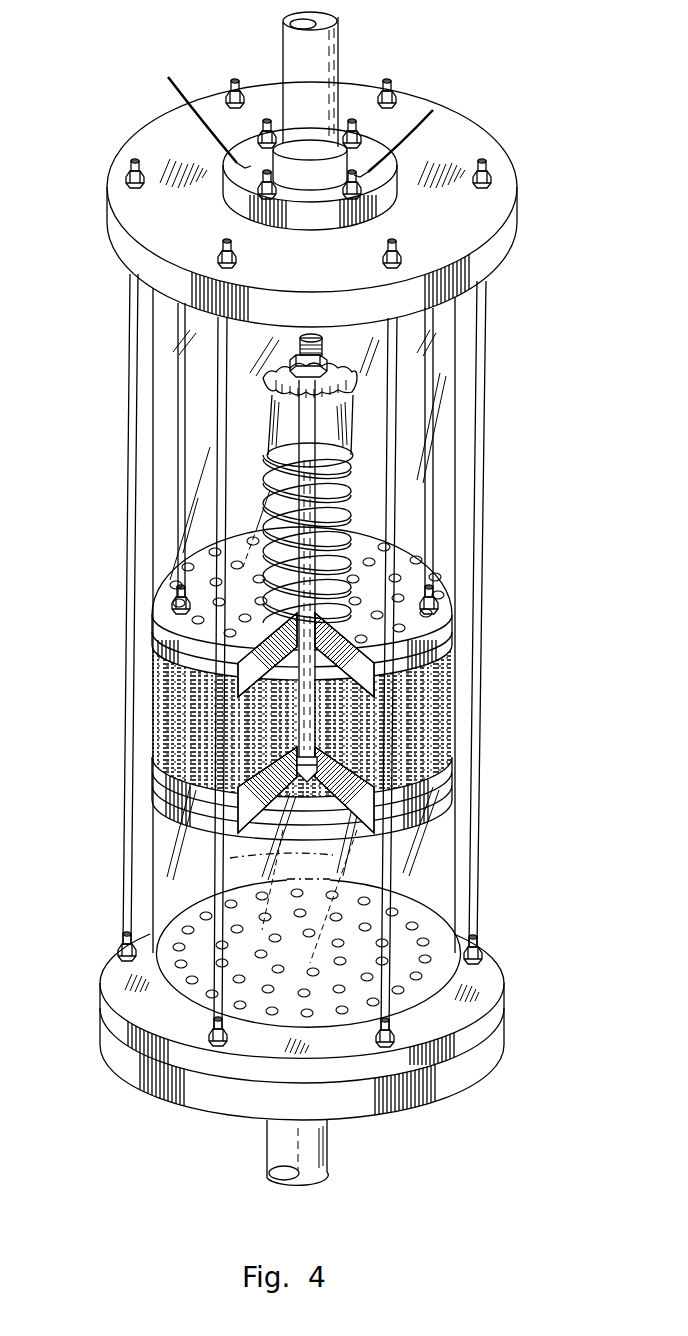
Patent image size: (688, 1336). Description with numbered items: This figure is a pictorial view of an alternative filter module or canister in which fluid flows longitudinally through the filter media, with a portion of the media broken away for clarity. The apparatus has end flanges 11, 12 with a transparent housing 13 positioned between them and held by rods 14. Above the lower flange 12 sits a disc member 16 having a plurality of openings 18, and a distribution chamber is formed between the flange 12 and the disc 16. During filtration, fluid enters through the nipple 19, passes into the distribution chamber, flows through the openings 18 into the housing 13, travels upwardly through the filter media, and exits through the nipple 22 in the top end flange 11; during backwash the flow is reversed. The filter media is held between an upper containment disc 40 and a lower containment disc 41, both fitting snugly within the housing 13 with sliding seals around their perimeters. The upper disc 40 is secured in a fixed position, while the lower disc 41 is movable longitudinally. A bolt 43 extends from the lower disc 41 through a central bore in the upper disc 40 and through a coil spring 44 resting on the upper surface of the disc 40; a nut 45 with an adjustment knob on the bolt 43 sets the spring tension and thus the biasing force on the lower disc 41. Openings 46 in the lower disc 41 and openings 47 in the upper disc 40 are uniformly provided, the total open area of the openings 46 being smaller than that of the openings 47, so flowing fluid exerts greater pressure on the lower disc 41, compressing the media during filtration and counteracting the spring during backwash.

The end flange 11 is at (467, 128).
The end flange 12 is at (167, 1075).
The transparent housing 13 is at (152, 453).
The rods 14 is at (213, 353).
The disc member 16 is at (123, 980).
The openings 18 is at (338, 992).
The nipple 19 is at (320, 1143).
The nipple 22 is at (318, 75).
The upper containment disc 40 is at (190, 635).
The lower containment disc 41 is at (160, 790).
The bolt 43 is at (340, 510).
The coil spring 44 is at (353, 433).
The nut 45 is at (325, 353).
The openings 46 is at (287, 793).
The openings 47 is at (172, 603).